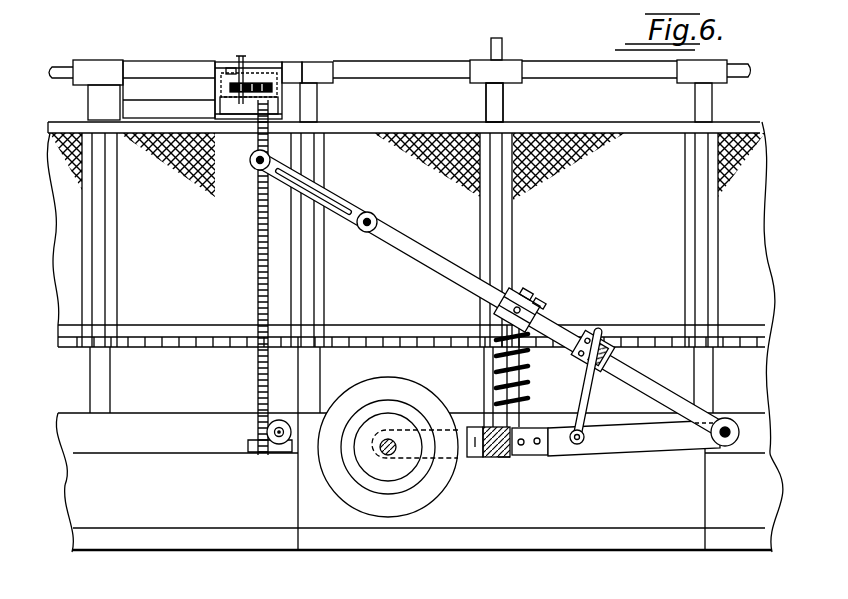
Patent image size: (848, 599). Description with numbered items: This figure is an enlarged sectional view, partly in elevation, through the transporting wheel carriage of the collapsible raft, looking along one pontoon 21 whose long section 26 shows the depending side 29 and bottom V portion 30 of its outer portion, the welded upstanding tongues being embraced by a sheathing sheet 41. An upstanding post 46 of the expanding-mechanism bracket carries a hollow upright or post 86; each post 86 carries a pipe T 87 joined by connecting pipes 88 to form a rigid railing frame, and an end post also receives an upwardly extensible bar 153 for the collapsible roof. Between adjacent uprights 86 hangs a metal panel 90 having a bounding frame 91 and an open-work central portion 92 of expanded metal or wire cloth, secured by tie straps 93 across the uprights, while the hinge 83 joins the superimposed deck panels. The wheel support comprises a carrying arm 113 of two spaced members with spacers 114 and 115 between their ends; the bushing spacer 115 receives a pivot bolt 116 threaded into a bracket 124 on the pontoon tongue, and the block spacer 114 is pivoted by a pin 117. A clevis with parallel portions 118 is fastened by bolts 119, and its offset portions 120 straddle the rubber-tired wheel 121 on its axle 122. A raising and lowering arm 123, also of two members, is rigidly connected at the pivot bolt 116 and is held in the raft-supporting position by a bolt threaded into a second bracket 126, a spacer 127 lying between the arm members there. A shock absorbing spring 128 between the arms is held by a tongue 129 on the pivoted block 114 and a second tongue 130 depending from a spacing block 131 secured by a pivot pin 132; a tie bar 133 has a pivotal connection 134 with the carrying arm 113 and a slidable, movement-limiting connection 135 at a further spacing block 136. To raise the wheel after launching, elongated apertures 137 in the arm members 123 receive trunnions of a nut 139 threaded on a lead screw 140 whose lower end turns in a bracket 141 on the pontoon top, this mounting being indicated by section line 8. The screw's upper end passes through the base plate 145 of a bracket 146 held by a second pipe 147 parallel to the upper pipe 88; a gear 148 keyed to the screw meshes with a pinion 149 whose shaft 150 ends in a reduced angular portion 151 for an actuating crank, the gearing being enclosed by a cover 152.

The section line 8- 8 is at (260, 393).
The pontoon 21 is at (76, 498).
The pontoon section 26 is at (73, 553).
The depending side 29 is at (148, 515).
The bottom V portion 30 is at (207, 544).
The sheathing sheet 41 is at (150, 427).
The upstanding post 46 is at (88, 382).
The hinge 83 is at (170, 336).
The hollow upright 86 is at (98, 252).
The pipe T 87 is at (320, 66).
The connecting pipe 88 is at (415, 68).
The metal panel 90 is at (510, 62).
The bounding frame 91 is at (687, 222).
The central portion 92 is at (532, 180).
The tie strap 93 is at (505, 126).
The carrying arm 113 is at (628, 443).
The spacer block 114 is at (501, 460).
The spacer 115 is at (722, 448).
The pivot bolt 116 is at (729, 419).
The pin 117 is at (488, 462).
The parallel portion 118 is at (546, 457).
The bolt 119 is at (538, 430).
The offset portion 120 is at (472, 425).
The wheel 121 is at (423, 387).
The axle 122 is at (384, 460).
The raising and lowering arm 123 is at (425, 256).
The bracket 124 is at (736, 408).
The bracket 126 is at (279, 417).
The spacer 127 is at (380, 222).
The shock absorbing spring 128 is at (512, 388).
The lug or tongue 129 is at (500, 385).
The second tongue 130 is at (502, 322).
The spacing block 131 is at (524, 306).
The pivot pin 132 is at (546, 314).
The tie bar 133 is at (588, 408).
The pivotal connection 134 is at (578, 448).
The slidable connection 135 is at (600, 327).
The spacing block 136 is at (612, 352).
The elongated aperture 137 is at (350, 199).
The nut 139 is at (252, 165).
The lead screw 140 is at (258, 292).
The bracket 141 is at (250, 445).
The base plate 145 is at (236, 115).
The bracket 146 is at (222, 60).
The second pipe 147 is at (132, 105).
The gear 148 is at (288, 63).
The gear pinion 149 is at (222, 86).
The pinion shaft 150 is at (252, 68).
The reduced angular portion 151 is at (244, 57).
The cover 152 is at (237, 62).
The extensible bar 153 is at (492, 50).